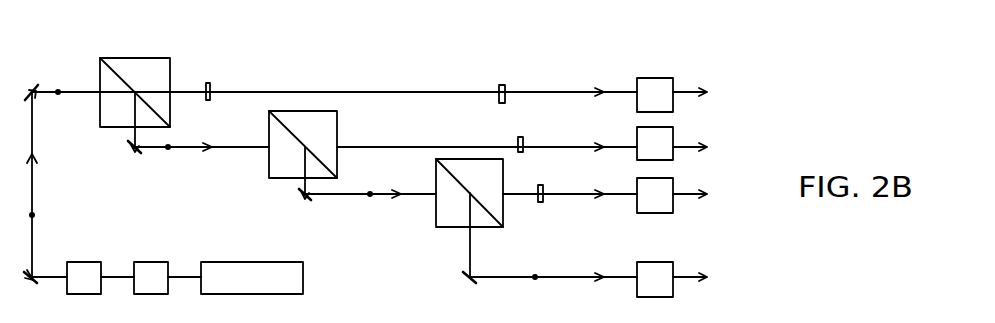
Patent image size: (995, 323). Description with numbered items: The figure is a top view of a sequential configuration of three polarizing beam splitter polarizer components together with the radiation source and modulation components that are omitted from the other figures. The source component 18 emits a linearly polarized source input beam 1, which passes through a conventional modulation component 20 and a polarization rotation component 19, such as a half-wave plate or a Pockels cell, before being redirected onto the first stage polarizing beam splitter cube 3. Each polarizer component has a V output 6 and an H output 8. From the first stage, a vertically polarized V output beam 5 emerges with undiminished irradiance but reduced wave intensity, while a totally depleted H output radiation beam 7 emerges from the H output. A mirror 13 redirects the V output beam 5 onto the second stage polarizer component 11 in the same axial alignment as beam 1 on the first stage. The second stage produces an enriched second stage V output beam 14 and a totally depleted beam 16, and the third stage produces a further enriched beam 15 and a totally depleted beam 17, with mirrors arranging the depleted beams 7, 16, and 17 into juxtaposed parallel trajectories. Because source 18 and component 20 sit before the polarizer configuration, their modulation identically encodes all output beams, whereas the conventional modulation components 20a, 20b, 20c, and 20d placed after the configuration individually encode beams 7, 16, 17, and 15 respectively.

The source input beam 1 is at (59, 80).
The polarizing beam splitter cube 3 is at (103, 37).
The V output beam 5 is at (178, 153).
The V output 6 is at (128, 133).
The H output radiation beam 7 is at (238, 88).
The H output 8 is at (172, 83).
The second stage polarizer component 11 is at (258, 180).
The mirror 13 is at (130, 152).
The second stage V output beam 14 is at (356, 203).
The third stage V output beam 15 is at (542, 260).
The totally depleted beam 16 is at (387, 138).
The totally depleted beam 17 is at (554, 187).
The source component 18 is at (311, 260).
The polarization rotation component 19 is at (160, 255).
The conventional modulation component 20 is at (88, 255).
The conventional modulation component 20a is at (674, 71).
The conventional modulation component 20b is at (683, 126).
The conventional modulation component 20c is at (679, 182).
The conventional modulation component 20d is at (677, 258).